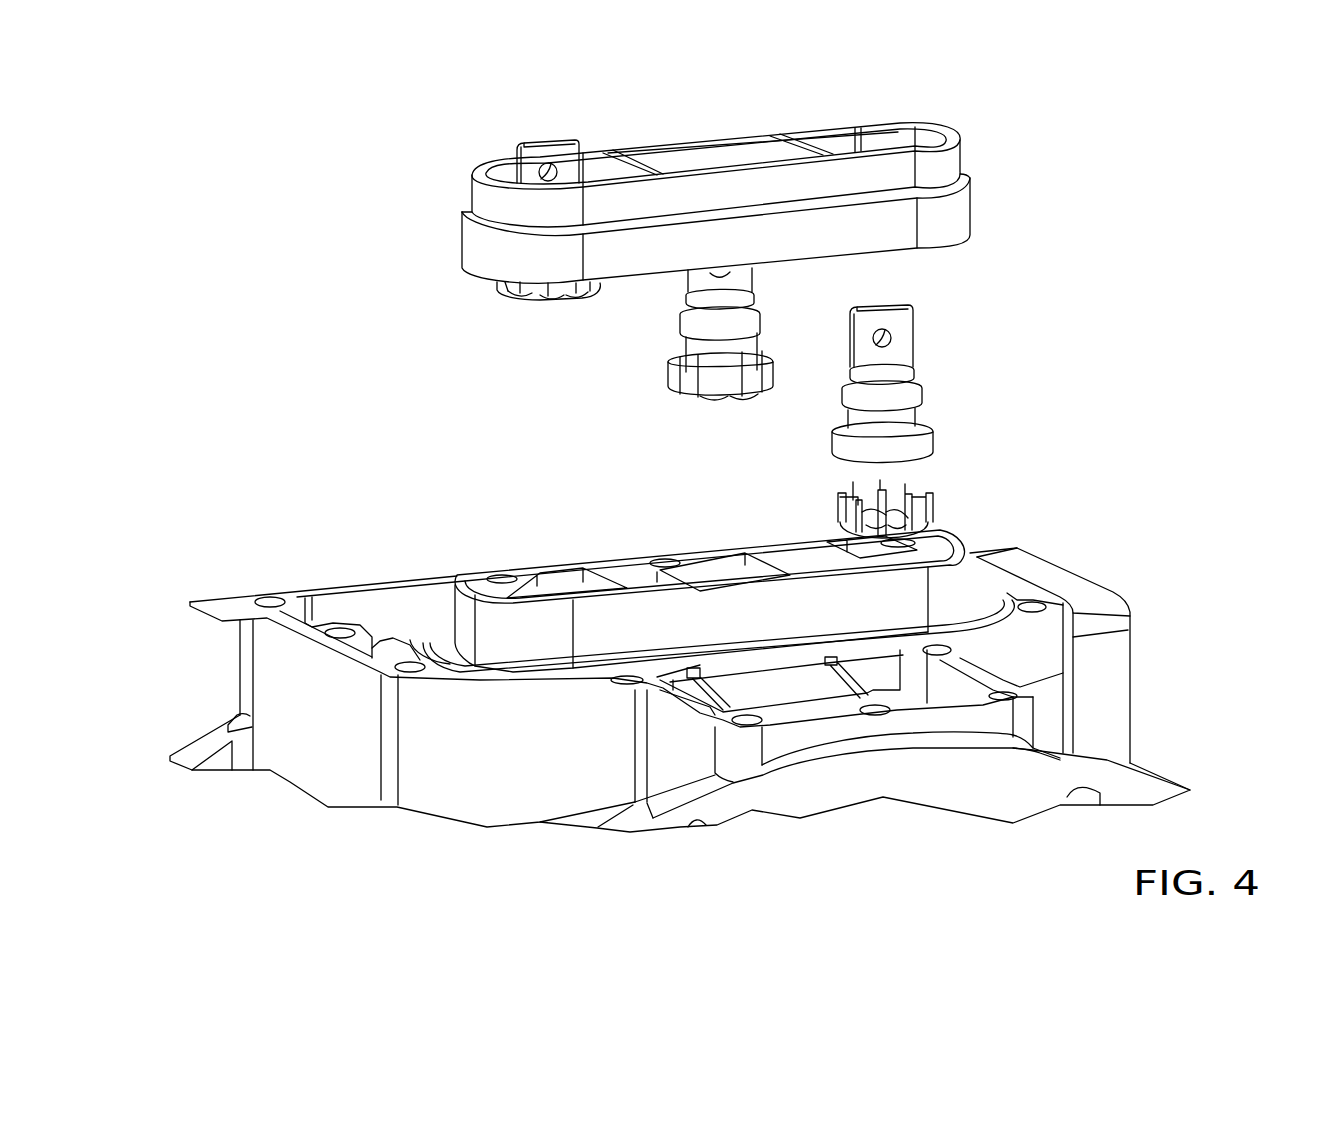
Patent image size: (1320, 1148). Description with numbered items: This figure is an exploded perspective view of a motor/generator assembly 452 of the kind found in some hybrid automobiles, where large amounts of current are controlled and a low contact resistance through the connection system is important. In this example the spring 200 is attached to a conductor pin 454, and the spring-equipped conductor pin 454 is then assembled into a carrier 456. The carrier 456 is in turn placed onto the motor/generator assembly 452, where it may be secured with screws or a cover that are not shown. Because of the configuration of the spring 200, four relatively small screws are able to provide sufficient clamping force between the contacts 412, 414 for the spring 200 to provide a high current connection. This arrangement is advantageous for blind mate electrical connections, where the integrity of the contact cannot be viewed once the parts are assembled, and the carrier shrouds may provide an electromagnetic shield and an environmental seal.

The motor/generator assembly 452 is at (1070, 233).
The conductor pin 454 is at (536, 143).
The carrier 456 is at (957, 162).
The spring 200 is at (512, 292).
The contact 412 is at (918, 457).
The contact 414 is at (910, 560).